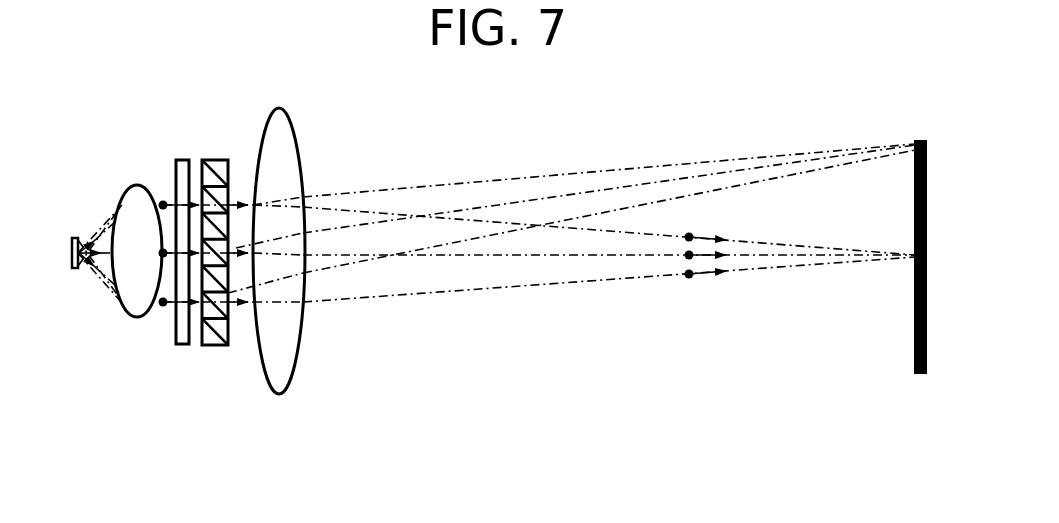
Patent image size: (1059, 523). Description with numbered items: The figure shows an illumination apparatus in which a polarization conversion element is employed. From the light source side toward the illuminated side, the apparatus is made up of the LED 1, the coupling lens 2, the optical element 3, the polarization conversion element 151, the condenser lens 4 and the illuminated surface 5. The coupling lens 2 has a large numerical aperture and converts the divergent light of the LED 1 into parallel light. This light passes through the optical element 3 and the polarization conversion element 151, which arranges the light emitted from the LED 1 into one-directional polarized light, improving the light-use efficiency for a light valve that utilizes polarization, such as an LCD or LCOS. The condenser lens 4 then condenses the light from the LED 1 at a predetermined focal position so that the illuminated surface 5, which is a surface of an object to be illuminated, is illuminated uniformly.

The LED 1 is at (75, 269).
The coupling lens 2 is at (130, 318).
The optical element 3 is at (178, 345).
The polarization conversion element 151 is at (216, 346).
The condenser lens 4 is at (275, 395).
The illuminated surface 5 is at (919, 374).